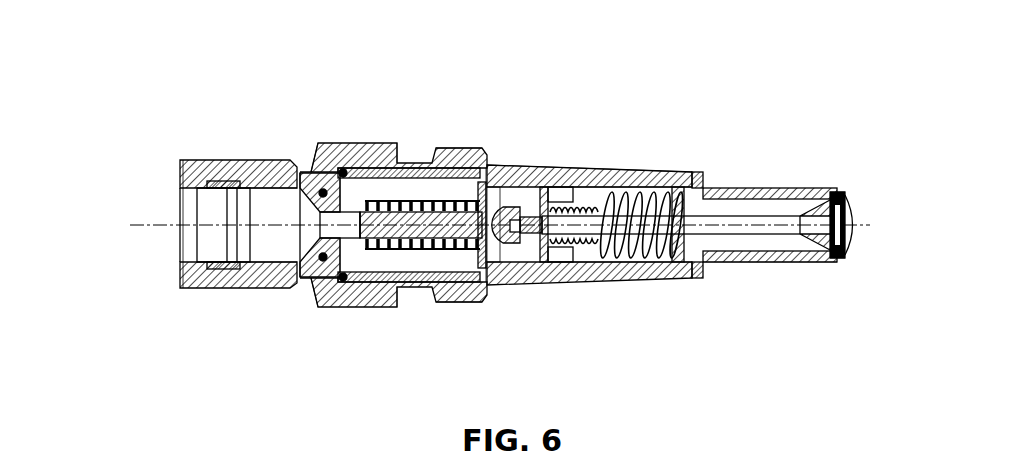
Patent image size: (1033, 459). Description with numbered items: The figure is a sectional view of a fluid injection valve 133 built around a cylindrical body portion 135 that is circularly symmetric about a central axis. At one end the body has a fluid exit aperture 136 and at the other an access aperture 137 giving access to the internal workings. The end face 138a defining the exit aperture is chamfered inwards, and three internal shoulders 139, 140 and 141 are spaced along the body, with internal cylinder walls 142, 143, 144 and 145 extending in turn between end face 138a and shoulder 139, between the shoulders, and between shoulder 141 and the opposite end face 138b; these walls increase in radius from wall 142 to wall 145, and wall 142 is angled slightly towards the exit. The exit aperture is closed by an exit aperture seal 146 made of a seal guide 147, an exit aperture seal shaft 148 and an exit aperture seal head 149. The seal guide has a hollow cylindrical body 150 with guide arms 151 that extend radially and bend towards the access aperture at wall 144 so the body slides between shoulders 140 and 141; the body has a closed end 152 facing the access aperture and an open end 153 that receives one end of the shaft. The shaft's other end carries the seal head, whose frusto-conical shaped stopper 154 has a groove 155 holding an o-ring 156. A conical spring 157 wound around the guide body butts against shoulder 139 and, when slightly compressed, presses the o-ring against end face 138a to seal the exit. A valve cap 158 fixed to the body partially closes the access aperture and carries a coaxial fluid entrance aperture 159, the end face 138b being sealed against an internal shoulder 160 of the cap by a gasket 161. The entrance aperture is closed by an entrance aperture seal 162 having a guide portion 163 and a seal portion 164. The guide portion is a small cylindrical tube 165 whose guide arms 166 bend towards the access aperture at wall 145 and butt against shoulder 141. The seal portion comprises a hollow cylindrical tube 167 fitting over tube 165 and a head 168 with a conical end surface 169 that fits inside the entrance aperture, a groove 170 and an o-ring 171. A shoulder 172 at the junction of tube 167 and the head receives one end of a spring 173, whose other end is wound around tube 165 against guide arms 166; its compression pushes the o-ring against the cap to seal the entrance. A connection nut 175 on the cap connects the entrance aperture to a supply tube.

The fluid injection valve 133 is at (429, 82).
The cylindrical body portion 135 is at (597, 167).
The fluid exit aperture 136 is at (861, 234).
The access aperture 137 is at (320, 185).
The end face 138a is at (841, 192).
The end face 138b is at (341, 170).
The internal shoulder 139 is at (698, 172).
The internal shoulder 140 is at (615, 169).
The internal shoulder 141 is at (503, 166).
The internal cylinder wall 142 is at (778, 188).
The internal cylinder wall 143 is at (655, 170).
The internal cylinder wall 144 is at (573, 167).
The internal cylinder wall 145 is at (420, 163).
The exit aperture seal 146 is at (696, 240).
The seal guide 147 is at (548, 250).
The exit aperture seal shaft 148 is at (753, 236).
The exit aperture seal head 149 is at (803, 263).
The hollow cylindrical body 150 is at (524, 283).
The guide arms 151 is at (557, 166).
The closed end 152 is at (509, 245).
The open end 153 is at (592, 240).
The frusto-conical shaped stopper 154 is at (811, 205).
The groove 155 is at (847, 213).
The o-ring 156 is at (836, 260).
The conical spring 157 is at (645, 283).
The valve cap 158 is at (403, 143).
The fluid entrance aperture 159 is at (264, 207).
The internal shoulder 160 is at (338, 300).
The gasket 161 is at (319, 298).
The entrance aperture seal 162 is at (419, 252).
The guide portion 163 is at (475, 150).
The seal portion 164 is at (290, 245).
The small cylindrical tube 165 is at (428, 288).
The guide arms 166 is at (472, 296).
The hollow cylindrical tube 167 is at (452, 148).
The head 168 is at (280, 292).
The conical end surface 169 is at (290, 190).
The groove 170 is at (318, 180).
The o-ring 171 is at (303, 297).
The shoulder 172 is at (363, 147).
The spring 173 is at (391, 262).
The connection nut 175 is at (188, 290).